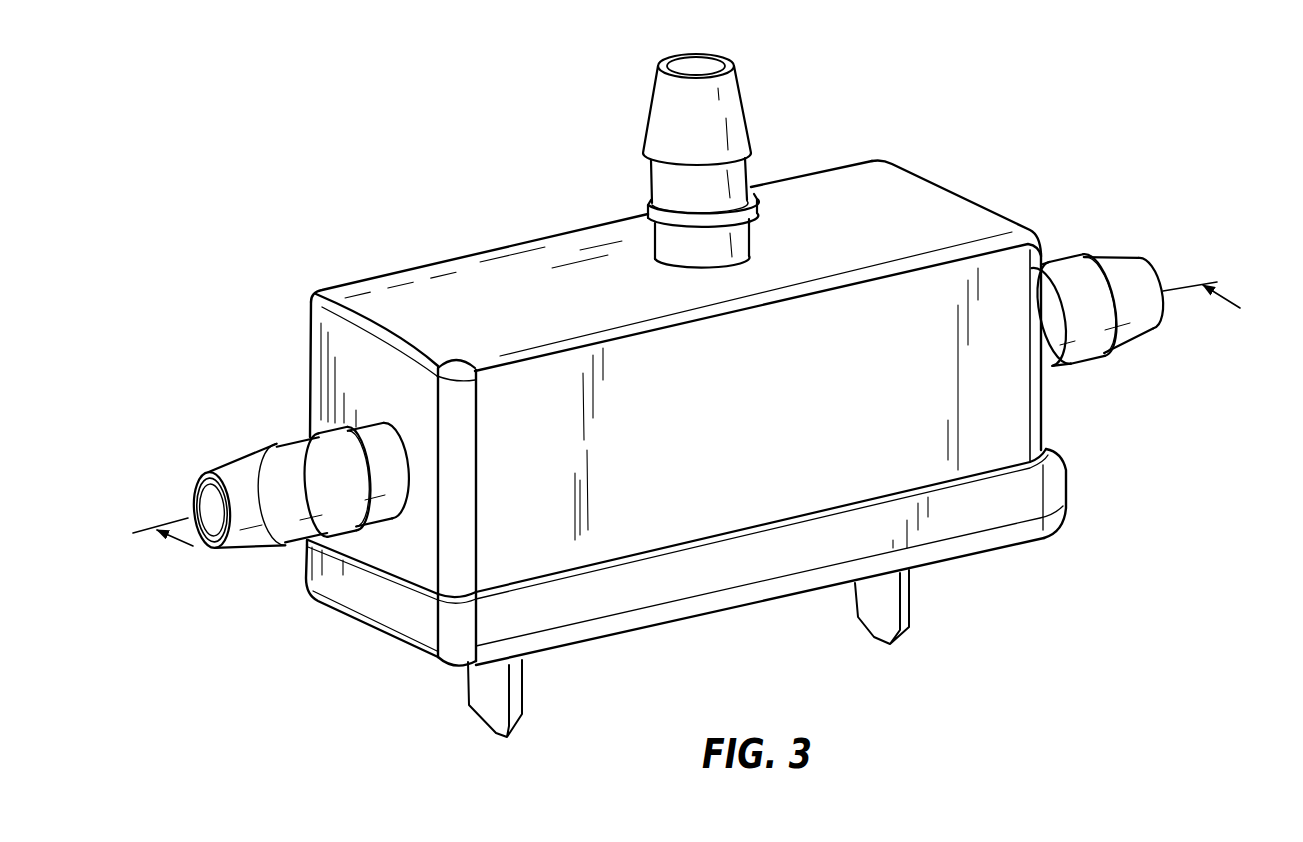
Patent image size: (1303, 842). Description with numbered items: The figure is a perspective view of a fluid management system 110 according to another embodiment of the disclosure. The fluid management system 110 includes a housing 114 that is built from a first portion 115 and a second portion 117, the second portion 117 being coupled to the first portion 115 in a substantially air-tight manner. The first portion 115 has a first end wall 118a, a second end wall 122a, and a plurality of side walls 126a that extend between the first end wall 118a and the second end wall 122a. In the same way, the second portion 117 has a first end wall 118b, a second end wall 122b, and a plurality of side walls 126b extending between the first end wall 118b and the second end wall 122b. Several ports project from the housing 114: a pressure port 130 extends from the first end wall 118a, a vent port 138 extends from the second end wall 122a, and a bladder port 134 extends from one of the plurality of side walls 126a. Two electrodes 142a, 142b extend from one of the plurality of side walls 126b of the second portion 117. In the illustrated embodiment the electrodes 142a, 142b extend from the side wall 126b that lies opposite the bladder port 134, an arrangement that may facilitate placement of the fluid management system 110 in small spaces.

The fluid management system 110 is at (298, 157).
The housing 114 is at (332, 633).
The first portion 115 is at (303, 275).
The second portion 117 is at (1024, 570).
The first end wall 118a is at (350, 377).
The first end wall 118b is at (420, 613).
The second end wall 122a is at (972, 197).
The second end wall 122b is at (1052, 455).
The side walls 126a is at (637, 400).
The side walls 126b is at (743, 563).
The pressure port 130 is at (258, 465).
The bladder port 134 is at (733, 119).
The vent port 138 is at (1097, 265).
The electrode 142a is at (883, 628).
The electrode 142b is at (490, 705).